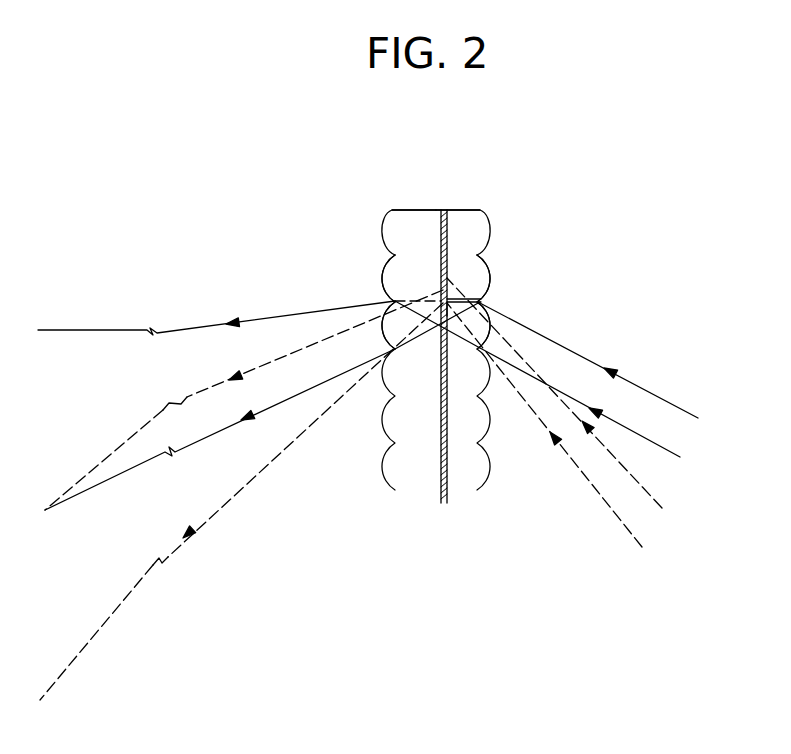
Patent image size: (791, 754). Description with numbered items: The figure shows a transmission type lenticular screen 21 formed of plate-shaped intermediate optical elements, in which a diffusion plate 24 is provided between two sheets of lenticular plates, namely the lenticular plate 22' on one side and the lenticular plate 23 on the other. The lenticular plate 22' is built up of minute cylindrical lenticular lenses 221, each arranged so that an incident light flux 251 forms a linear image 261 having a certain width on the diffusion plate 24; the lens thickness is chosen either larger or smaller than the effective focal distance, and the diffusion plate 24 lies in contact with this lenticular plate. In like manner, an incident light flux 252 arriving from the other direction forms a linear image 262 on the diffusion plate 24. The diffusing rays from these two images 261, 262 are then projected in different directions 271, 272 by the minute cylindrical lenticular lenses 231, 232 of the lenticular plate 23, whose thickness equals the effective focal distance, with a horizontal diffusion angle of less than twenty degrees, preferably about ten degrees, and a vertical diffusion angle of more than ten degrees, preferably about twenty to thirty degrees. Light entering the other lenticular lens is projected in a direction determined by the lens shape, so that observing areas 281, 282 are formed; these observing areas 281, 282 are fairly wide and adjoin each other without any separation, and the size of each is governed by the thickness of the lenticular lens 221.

The transmission type lenticular screen 21 is at (497, 138).
The lenticular plate 22' is at (464, 325).
The lenticular plate 23 is at (412, 222).
The diffusion plate 24 is at (441, 210).
The minute cylindrical lenticular lens 221 is at (476, 232).
The minute cylindrical lenticular lens 231 is at (388, 236).
The minute cylindrical lenticular lens 232 is at (383, 276).
The incident light flux 251 is at (698, 418).
The incident light flux 252 is at (668, 508).
The linear image 261 is at (447, 308).
The linear image 262 is at (482, 300).
The projection direction 271 is at (266, 405).
The projection direction 272 is at (205, 392).
The observing area 281 is at (107, 453).
The observing area 282 is at (100, 628).